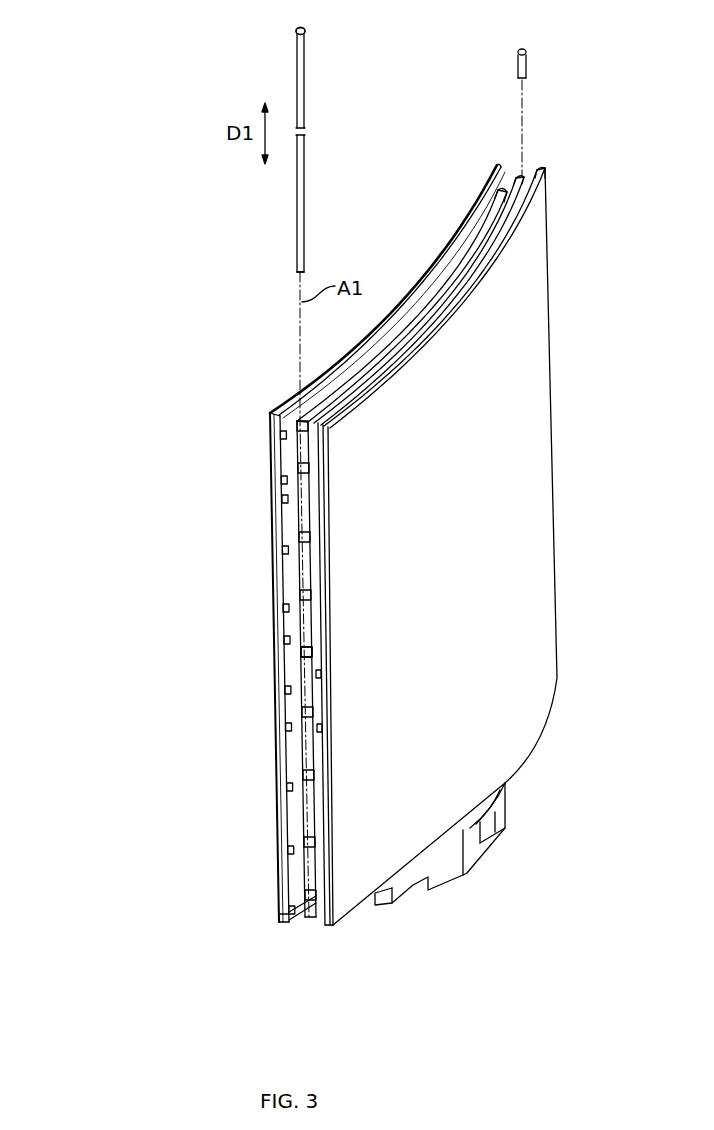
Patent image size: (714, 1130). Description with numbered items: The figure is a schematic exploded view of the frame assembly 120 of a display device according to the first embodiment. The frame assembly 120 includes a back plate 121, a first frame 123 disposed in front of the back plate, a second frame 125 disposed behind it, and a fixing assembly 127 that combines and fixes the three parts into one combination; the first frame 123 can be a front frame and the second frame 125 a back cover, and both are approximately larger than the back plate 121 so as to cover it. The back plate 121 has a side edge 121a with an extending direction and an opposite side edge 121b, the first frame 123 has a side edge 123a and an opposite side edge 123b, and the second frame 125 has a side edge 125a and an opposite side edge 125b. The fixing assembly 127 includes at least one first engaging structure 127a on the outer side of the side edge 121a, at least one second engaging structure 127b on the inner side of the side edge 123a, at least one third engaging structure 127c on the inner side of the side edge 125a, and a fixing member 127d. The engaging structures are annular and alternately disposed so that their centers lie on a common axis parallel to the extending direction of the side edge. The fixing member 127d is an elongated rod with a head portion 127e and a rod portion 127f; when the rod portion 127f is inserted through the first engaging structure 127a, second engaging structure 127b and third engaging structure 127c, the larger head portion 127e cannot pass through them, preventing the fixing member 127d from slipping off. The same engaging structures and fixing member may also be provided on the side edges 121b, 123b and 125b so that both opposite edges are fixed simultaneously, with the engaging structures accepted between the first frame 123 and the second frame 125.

The frame assembly 120 is at (60, 94).
The back plate 121 is at (313, 898).
The side edge 121a is at (306, 675).
The side edge 121b is at (522, 177).
The first frame 123 is at (307, 864).
The side edge 123a is at (305, 653).
The side edge 123b is at (500, 187).
The second frame 125 is at (358, 893).
The side edge 125a is at (308, 728).
The side edge 125b is at (545, 168).
The fixing assembly 127 is at (86, 232).
The first engaging structure 127a is at (282, 638).
The second engaging structure 127b is at (273, 602).
The third engaging structure 127c is at (316, 498).
The fixing member 127d is at (274, 209).
The head portion 127e is at (296, 30).
The rod portion 127f is at (297, 272).